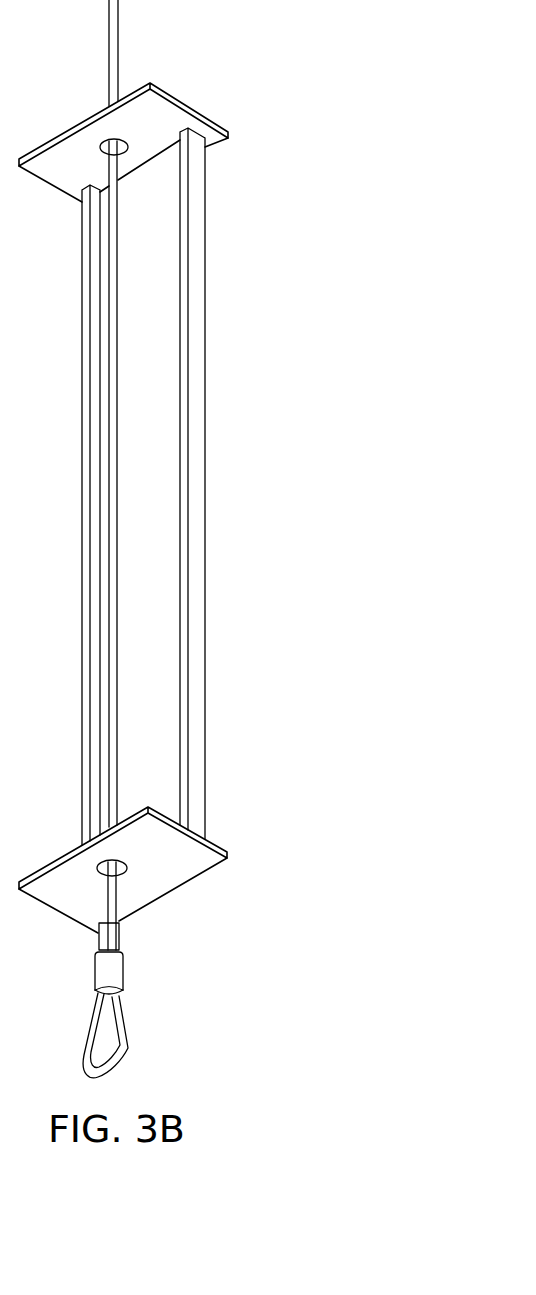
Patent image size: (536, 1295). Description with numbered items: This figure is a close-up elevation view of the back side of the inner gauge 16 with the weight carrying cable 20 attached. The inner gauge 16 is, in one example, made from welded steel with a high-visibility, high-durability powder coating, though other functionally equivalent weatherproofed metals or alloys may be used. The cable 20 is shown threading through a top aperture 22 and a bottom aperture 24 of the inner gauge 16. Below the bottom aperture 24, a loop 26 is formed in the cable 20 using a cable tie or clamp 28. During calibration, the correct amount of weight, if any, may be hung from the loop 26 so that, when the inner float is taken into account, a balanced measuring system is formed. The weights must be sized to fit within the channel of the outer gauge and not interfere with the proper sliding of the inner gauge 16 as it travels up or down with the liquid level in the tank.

The inner gauge 16 is at (197, 357).
The weight carrying cable 20 is at (118, 43).
The top aperture 22 is at (124, 140).
The bottom aperture 24 is at (124, 873).
The loop 26 is at (130, 1030).
The cable tie or clamp 28 is at (123, 970).